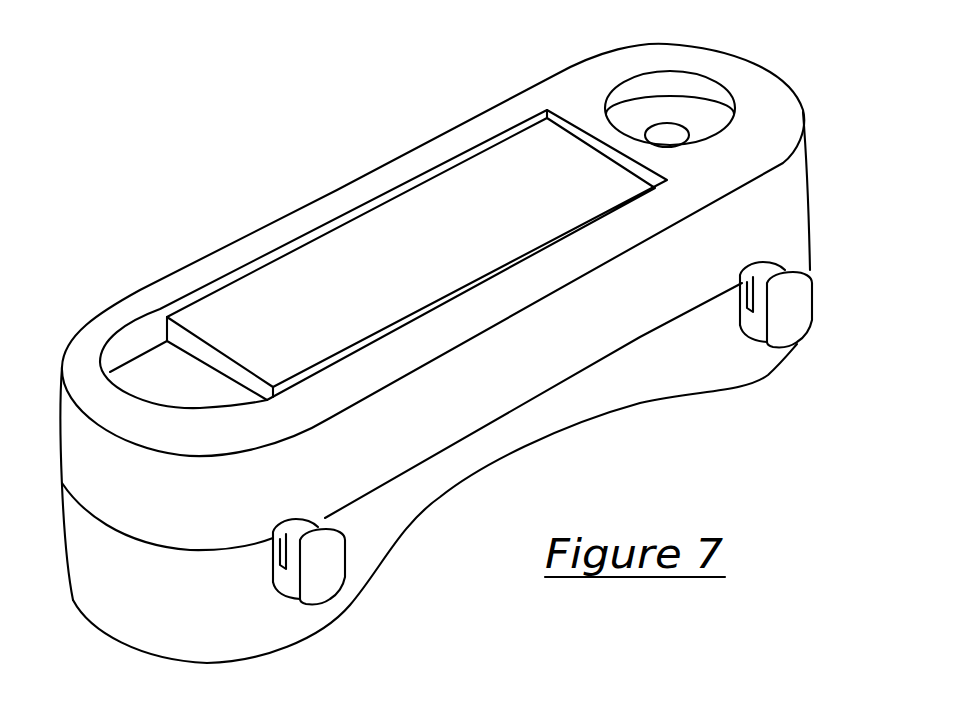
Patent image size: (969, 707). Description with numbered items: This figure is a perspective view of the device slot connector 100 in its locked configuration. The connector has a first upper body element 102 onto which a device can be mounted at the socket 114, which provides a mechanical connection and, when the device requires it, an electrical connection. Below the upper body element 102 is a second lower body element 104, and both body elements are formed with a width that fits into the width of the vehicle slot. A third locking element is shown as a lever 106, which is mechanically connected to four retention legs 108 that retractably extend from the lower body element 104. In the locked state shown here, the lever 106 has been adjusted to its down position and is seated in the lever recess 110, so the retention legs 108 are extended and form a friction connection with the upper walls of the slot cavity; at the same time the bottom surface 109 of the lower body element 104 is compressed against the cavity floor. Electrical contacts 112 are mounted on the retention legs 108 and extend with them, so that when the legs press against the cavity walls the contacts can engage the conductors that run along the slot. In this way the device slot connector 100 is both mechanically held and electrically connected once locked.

The device slot connector 100 is at (205, 167).
The first upper body element 102 is at (807, 153).
The second lower body element 104 is at (808, 257).
The lever 106 is at (395, 243).
The retention legs 108 is at (790, 309).
The bottom surface 109 is at (207, 662).
The lever recess 110 is at (165, 378).
The electrical contacts 112 is at (785, 270).
The socket 114 is at (667, 133).